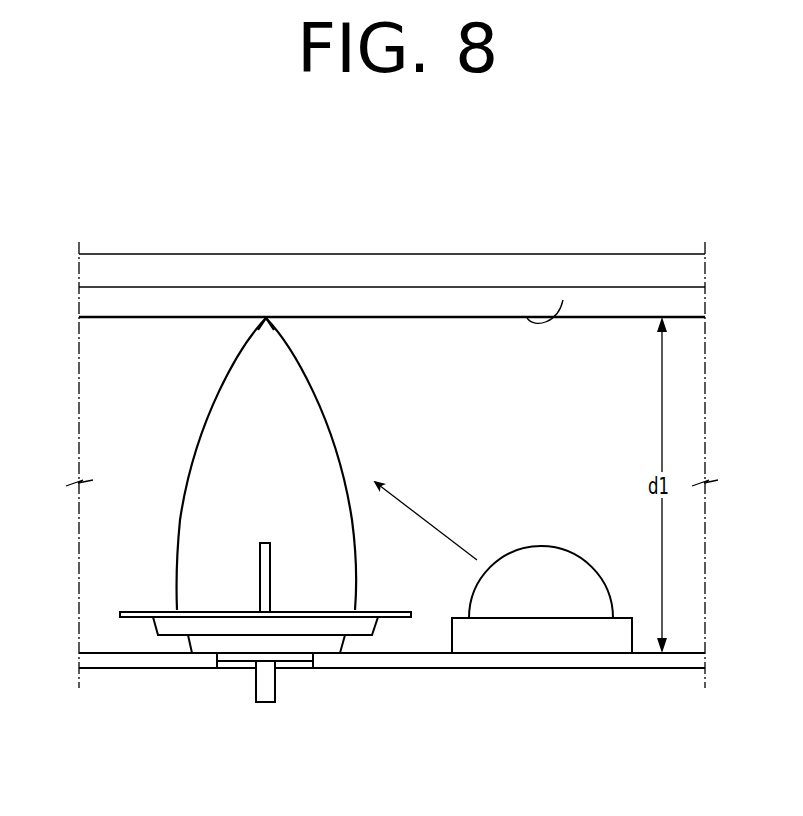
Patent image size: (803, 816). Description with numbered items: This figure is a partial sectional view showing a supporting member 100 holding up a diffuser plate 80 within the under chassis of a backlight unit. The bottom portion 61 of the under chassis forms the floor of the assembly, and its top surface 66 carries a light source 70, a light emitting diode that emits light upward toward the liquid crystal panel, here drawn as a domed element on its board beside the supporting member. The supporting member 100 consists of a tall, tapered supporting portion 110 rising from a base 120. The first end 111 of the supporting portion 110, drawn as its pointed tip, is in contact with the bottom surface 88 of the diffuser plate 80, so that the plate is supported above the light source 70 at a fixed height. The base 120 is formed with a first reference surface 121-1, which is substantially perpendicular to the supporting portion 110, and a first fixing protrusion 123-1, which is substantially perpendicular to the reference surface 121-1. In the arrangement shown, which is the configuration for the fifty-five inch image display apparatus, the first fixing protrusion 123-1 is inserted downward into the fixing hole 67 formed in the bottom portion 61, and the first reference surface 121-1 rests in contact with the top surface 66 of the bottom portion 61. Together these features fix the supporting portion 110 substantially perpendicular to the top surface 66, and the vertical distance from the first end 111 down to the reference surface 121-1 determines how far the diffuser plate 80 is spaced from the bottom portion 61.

The diffuser plate 80 is at (695, 300).
The bottom surface of the diffuser plate 88 is at (563, 300).
The supporting member 100 is at (214, 462).
The supporting portion 110 is at (215, 460).
The first end of the supporting portion 111 is at (266, 318).
The base 120 is at (216, 667).
The first reference surface 121-1 is at (203, 654).
The first fixing protrusion 123-1 is at (242, 662).
The fixing hole 67 is at (302, 665).
The bottom portion 61 is at (400, 664).
The top surface of the bottom portion 66 is at (103, 656).
The light source 70 is at (598, 592).